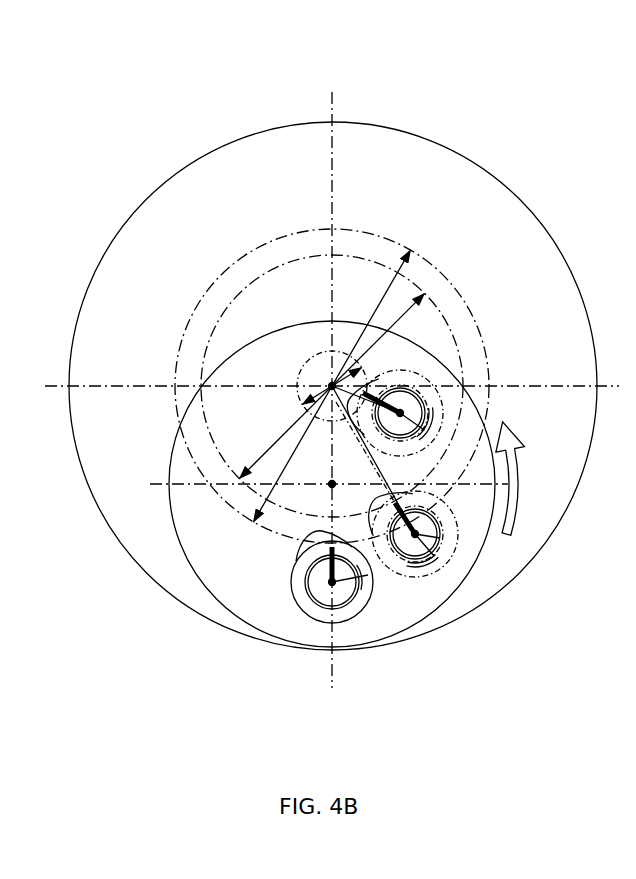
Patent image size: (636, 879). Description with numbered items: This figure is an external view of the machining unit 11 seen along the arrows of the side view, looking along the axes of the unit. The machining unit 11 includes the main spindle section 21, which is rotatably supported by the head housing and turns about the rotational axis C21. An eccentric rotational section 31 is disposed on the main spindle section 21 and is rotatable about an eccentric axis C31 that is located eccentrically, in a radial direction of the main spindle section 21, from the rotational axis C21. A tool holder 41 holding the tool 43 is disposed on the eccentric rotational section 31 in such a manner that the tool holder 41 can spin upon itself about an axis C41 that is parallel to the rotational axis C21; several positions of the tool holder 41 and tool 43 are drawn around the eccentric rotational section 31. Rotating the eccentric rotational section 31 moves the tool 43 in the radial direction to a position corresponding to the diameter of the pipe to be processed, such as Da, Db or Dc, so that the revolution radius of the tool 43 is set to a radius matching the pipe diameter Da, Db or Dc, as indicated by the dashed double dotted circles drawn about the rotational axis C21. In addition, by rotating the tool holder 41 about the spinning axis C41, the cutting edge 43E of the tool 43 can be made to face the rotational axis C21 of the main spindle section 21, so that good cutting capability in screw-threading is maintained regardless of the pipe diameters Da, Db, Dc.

The machining unit 11 is at (409, 112).
The main spindle section 21 is at (173, 194).
The eccentric rotational section 31 is at (437, 597).
The tool holder 41 is at (432, 382).
The tool 43 is at (293, 644).
The cutting edge 43E is at (366, 390).
The rotational axis C21 is at (320, 370).
The eccentric axis C31 is at (326, 488).
The spinning axis C41 is at (404, 413).
The pipe diameter Da is at (389, 287).
The pipe diameter Db is at (416, 302).
The pipe diameter Dc is at (316, 379).